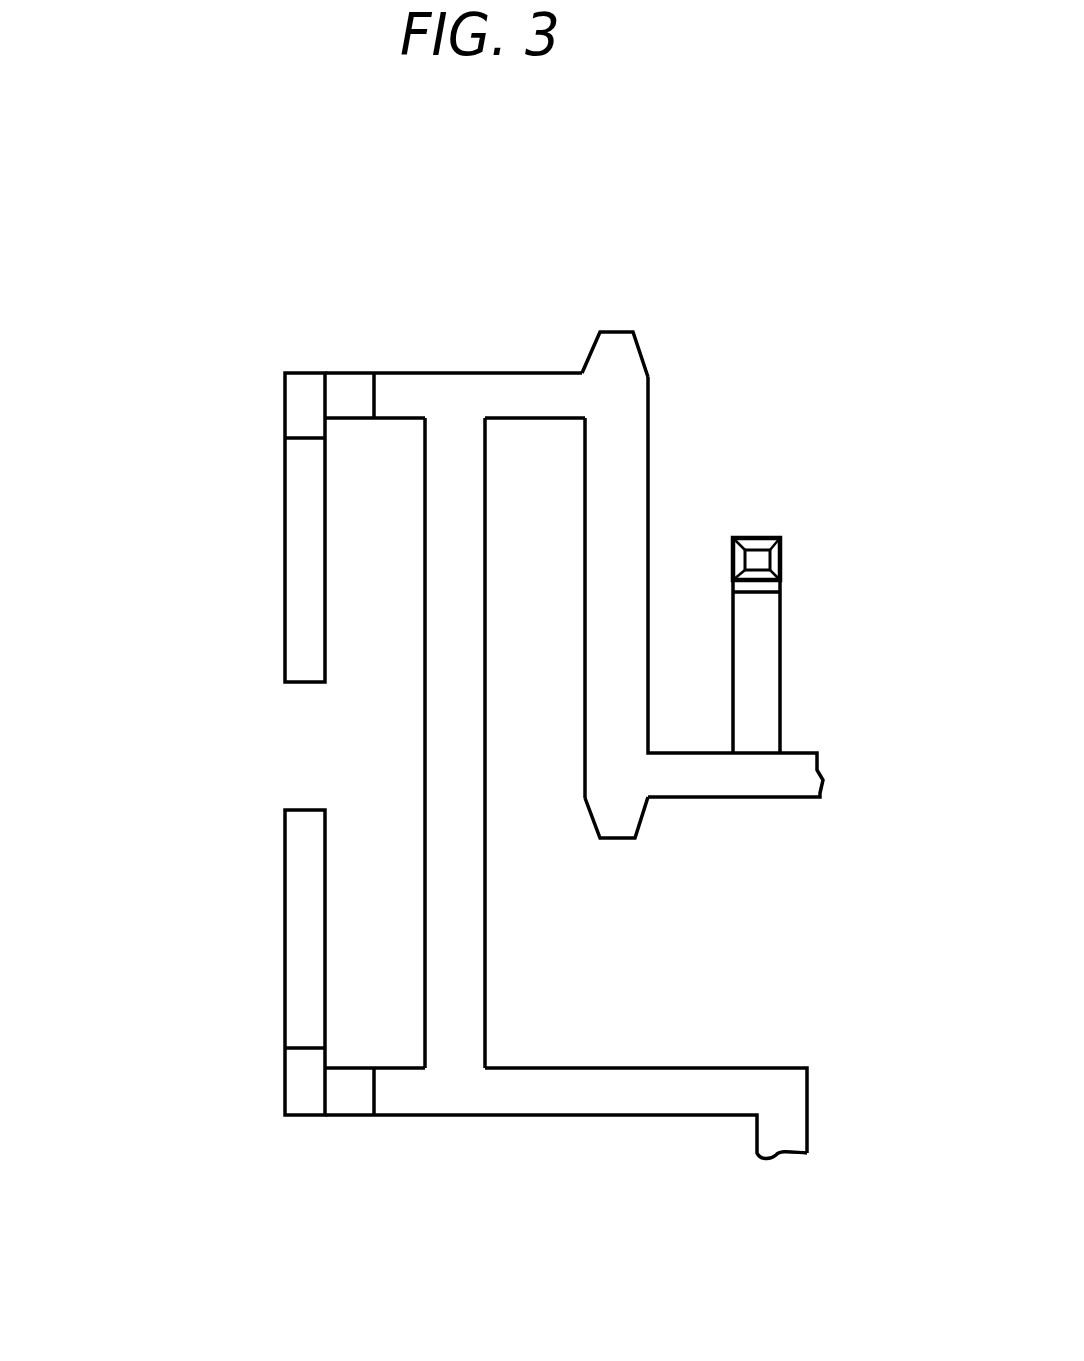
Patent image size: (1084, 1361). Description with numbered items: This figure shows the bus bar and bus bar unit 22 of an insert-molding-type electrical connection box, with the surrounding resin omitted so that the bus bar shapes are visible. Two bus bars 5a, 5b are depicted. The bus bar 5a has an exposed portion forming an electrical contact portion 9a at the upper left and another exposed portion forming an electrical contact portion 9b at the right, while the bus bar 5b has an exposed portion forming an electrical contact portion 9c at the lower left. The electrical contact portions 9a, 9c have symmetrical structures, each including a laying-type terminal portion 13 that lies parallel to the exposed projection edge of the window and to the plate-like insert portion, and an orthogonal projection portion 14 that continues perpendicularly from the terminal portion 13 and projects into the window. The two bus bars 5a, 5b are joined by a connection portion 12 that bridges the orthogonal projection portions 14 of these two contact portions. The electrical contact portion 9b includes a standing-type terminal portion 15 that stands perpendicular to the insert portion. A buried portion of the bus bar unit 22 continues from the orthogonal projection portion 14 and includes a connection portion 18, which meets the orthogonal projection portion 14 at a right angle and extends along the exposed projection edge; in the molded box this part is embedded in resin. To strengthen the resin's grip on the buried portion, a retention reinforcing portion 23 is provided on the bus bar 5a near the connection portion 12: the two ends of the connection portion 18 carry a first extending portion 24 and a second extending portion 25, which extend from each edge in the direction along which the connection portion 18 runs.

The bus bar 5a is at (453, 350).
The bus bar 5b is at (460, 1145).
The electrical contact portion 9a is at (250, 540).
The electrical contact portion 9b is at (820, 522).
The electrical contact portion 9c is at (250, 992).
The connection portion 12 is at (423, 748).
The terminal portion 13 is at (283, 628).
The orthogonal projection portion 14 is at (358, 373).
The terminal portion 15 is at (757, 538).
The connection portion 18 is at (650, 412).
The bus bar unit 22 is at (238, 1152).
The retention reinforcing portion 23 is at (660, 567).
The first extending portion 24 is at (619, 332).
The second extending portion 25 is at (622, 840).